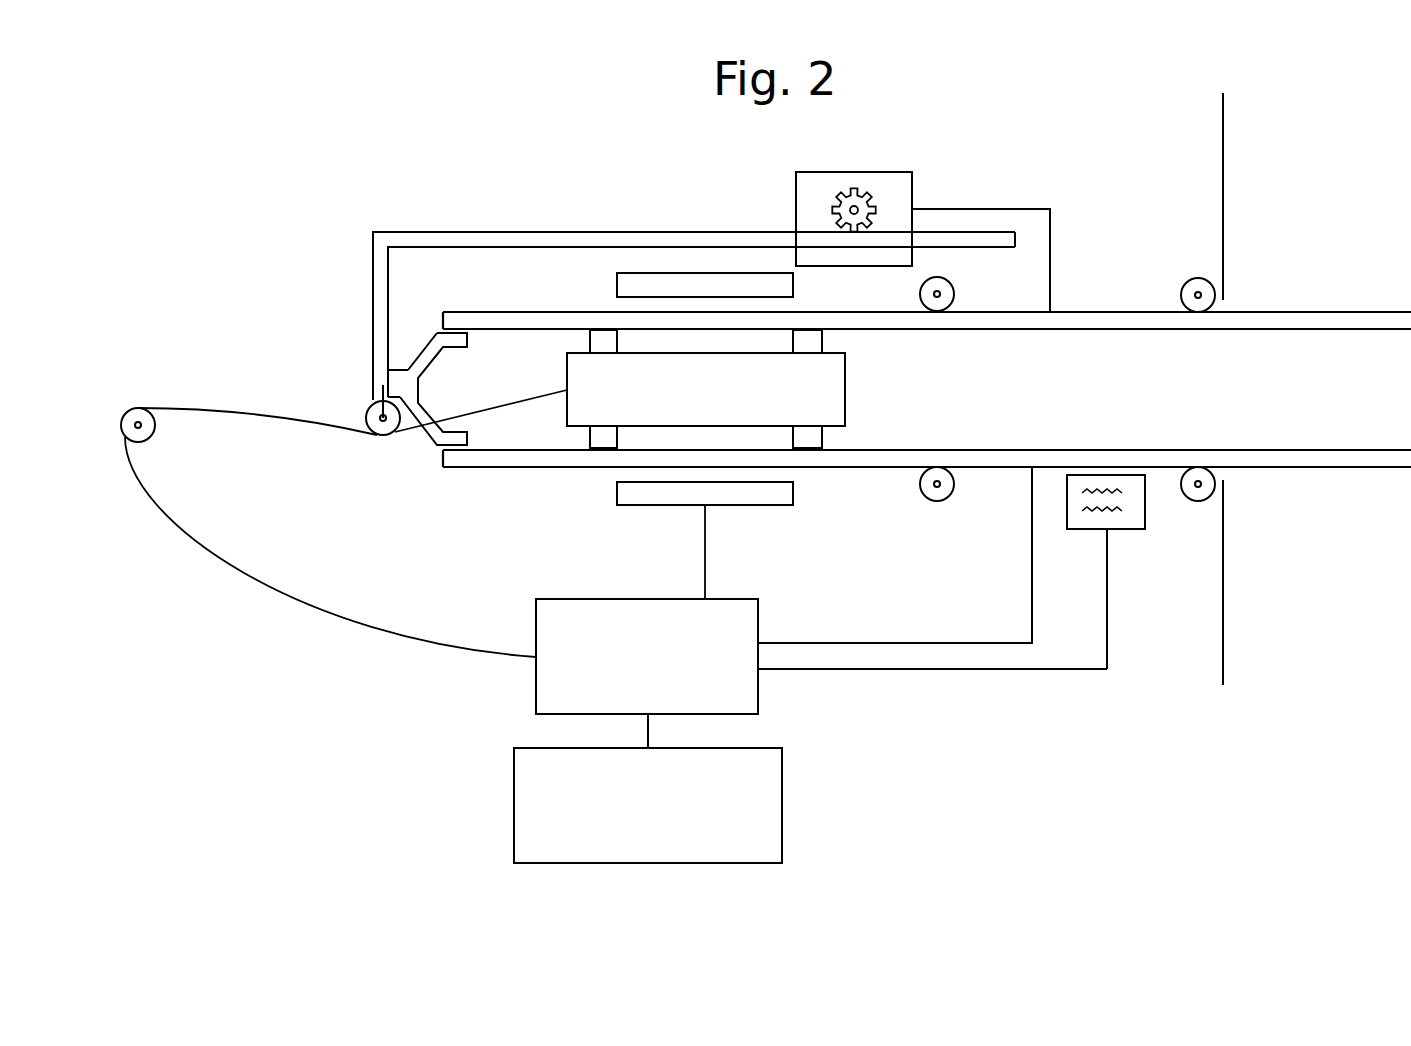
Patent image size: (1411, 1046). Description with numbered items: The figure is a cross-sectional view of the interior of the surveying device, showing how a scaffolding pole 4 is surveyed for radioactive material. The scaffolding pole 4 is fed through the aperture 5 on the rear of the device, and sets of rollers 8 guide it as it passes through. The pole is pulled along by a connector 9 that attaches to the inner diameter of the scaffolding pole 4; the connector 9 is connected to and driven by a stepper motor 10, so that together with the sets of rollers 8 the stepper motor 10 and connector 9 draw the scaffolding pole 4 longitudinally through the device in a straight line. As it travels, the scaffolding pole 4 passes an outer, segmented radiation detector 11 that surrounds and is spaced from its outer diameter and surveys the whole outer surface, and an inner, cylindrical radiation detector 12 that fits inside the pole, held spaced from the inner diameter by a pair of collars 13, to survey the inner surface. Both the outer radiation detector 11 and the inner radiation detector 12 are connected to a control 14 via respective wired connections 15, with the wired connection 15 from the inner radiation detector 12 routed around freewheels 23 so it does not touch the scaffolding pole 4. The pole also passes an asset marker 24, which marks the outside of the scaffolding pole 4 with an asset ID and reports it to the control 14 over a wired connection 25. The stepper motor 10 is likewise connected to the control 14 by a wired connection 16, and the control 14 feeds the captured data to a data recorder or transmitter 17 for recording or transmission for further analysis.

The scaffolding pole 4 is at (1383, 316).
The aperture 5 is at (1224, 472).
The sets of rollers 8 is at (955, 290).
The connector 9 is at (427, 350).
The stepper motor 10 is at (902, 185).
The outer segmented radiation detector 11 is at (664, 283).
The inner cylindrical radiation detector 12 is at (832, 378).
The collars 13 is at (604, 330).
The control 14 is at (758, 700).
The wired connections 15 is at (293, 597).
The wired connection 16 is at (1032, 612).
The data recorder or transmitter 17 is at (514, 788).
The freewheels 23 is at (138, 408).
The asset marker 24 is at (1130, 536).
The wired connection 25 is at (1048, 669).